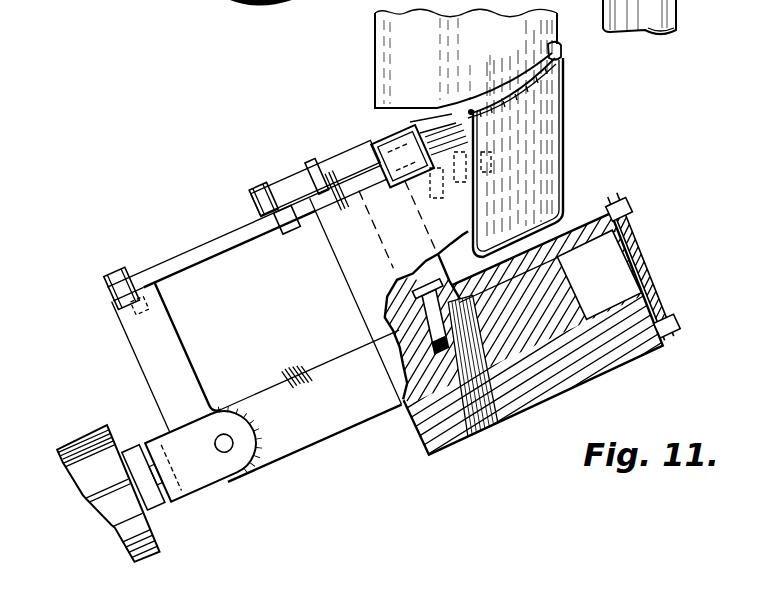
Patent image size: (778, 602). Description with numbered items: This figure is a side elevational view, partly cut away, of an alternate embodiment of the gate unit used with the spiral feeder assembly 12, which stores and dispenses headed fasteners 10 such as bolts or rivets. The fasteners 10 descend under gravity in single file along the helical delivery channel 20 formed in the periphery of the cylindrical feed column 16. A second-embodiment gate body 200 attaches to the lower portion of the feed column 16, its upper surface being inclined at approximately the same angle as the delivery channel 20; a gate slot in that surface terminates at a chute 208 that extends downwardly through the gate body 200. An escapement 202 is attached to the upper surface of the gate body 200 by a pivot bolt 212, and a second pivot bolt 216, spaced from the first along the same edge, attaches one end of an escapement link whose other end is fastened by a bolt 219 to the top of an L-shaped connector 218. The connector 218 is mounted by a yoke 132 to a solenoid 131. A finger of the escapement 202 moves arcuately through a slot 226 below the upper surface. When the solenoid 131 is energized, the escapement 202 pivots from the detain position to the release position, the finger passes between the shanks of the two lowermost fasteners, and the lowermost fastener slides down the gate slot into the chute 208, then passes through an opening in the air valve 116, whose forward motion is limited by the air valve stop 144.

The fasteners 10 is at (413, 418).
The spiral feeder assembly 12 is at (330, 79).
The feed column 16 is at (566, 137).
The delivery channel 20 is at (562, 51).
The air valve 116 is at (580, 284).
The solenoid 131 is at (92, 470).
The yoke 132 is at (188, 484).
The air valve stop 144 is at (625, 236).
The gate body 200 is at (637, 350).
The escapement 202 is at (284, 185).
The chute 208 is at (433, 275).
The pivot bolt 212 is at (311, 163).
The second pivot bolt 216 is at (258, 190).
The L-shaped connector 218 is at (160, 355).
The bolt 219 is at (122, 278).
The slot 226 is at (390, 142).